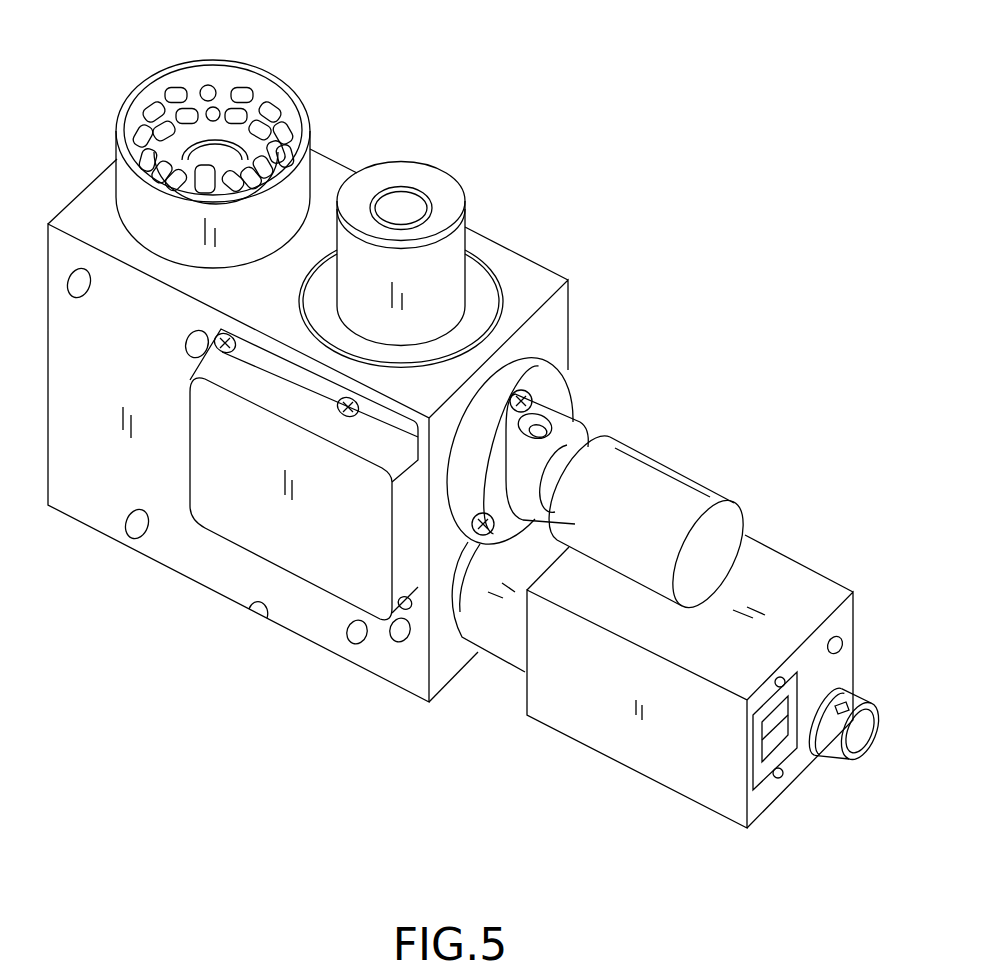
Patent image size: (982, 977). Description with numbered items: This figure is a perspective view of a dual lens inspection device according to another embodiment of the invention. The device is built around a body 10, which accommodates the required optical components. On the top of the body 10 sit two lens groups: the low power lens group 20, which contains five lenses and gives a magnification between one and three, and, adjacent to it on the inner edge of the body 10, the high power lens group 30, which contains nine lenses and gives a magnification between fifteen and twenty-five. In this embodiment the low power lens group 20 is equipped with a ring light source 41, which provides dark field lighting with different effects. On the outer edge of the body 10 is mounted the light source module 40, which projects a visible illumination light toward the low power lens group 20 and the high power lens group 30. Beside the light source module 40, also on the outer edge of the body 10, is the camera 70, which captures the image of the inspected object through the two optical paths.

The body 10 is at (557, 330).
The low power lens group 20 is at (291, 193).
The ring light source 41 is at (244, 92).
The high power lens group 30 is at (447, 273).
The light source module 40 is at (647, 483).
The camera 70 is at (796, 588).